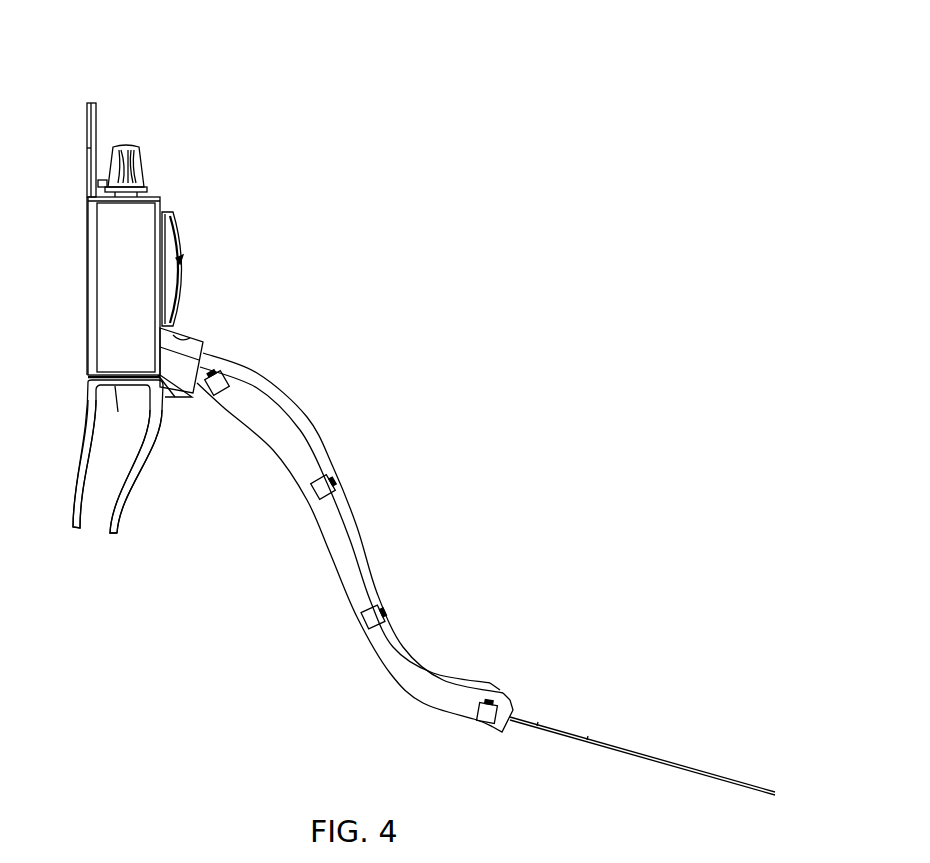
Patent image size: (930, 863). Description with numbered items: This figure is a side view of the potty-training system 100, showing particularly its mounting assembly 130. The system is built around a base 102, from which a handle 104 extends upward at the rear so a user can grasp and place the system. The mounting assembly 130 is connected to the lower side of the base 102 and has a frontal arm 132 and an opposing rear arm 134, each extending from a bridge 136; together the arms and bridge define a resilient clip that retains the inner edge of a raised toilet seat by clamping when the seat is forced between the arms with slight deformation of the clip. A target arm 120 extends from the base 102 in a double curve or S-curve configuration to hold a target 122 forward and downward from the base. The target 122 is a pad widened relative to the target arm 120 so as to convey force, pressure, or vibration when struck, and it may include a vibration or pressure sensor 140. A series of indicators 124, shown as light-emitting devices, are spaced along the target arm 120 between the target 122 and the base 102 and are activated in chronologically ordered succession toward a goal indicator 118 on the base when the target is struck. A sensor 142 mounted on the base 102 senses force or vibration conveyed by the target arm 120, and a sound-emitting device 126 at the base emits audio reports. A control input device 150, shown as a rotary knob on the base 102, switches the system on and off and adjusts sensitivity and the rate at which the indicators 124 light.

The potty-training system 100 is at (297, 192).
The base 102 is at (136, 216).
The handle 104 is at (94, 100).
The goal indicator 118 is at (183, 259).
The target arm 120 is at (306, 412).
The target 122 is at (588, 734).
The indicators 124 is at (222, 375).
The sound-emitting device 126 is at (170, 216).
The mounting assembly 130 is at (173, 413).
The frontal arm 132 is at (132, 494).
The rear arm 134 is at (83, 524).
The bridge 136 is at (117, 414).
The vibration or pressure sensor 140 is at (677, 744).
The sensor 142 is at (190, 342).
The control input device 150 is at (128, 143).